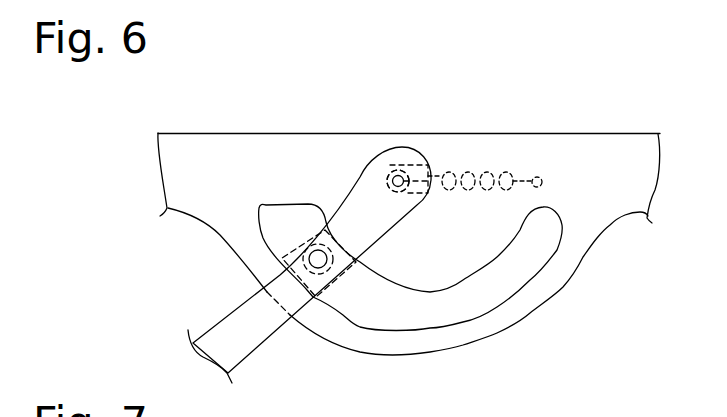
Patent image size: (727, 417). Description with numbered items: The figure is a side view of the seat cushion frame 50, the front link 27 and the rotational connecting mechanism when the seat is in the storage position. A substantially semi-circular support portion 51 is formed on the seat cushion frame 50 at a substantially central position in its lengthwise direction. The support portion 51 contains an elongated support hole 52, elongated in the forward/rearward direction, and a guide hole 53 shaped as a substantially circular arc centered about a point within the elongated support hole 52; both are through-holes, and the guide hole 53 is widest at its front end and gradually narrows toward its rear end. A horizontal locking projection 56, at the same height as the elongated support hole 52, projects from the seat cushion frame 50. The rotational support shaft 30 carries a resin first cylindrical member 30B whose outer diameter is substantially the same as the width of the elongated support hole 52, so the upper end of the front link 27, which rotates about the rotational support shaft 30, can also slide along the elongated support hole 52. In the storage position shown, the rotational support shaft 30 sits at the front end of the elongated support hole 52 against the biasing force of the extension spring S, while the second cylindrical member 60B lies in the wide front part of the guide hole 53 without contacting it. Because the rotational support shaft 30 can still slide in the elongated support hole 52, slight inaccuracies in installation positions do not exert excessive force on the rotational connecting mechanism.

The seat cushion frame 50 is at (200, 143).
The support portion 51 is at (238, 253).
The front link 27 is at (231, 325).
The elongated support hole 52 is at (435, 163).
The rotational support shaft 30 is at (390, 167).
The first cylindrical member 30B is at (398, 181).
The extension spring S is at (487, 170).
The horizontal locking projection 56 is at (541, 177).
The second cylindrical member 60B is at (303, 275).
The guide hole 53 is at (383, 322).